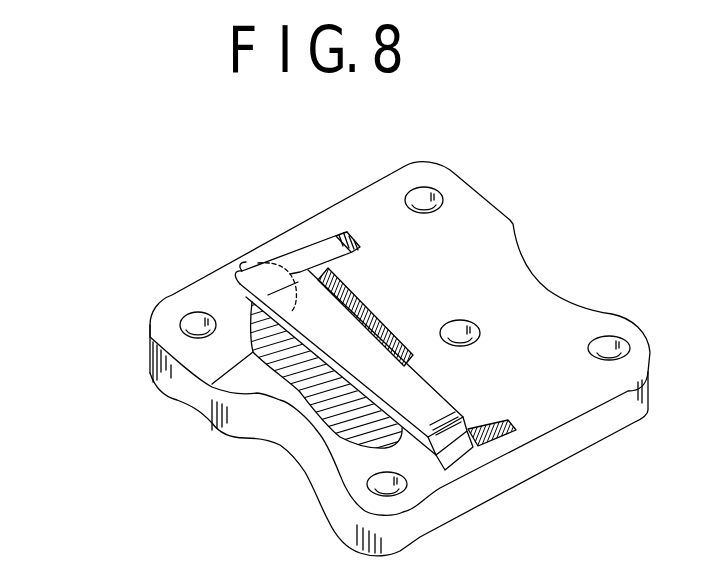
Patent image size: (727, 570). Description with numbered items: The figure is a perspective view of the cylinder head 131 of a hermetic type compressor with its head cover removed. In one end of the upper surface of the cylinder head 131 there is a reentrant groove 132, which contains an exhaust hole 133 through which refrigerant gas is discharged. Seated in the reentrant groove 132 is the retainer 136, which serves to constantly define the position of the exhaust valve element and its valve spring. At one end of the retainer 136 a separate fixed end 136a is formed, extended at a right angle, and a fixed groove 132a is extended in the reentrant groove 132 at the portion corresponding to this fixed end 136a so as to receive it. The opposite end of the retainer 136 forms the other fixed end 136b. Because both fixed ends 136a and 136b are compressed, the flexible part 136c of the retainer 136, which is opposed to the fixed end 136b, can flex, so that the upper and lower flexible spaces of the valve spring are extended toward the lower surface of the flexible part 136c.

The cylinder head 131 is at (160, 290).
The reentrant groove 132 is at (212, 384).
The fixed groove 132a is at (330, 240).
The exhaust hole 133 is at (300, 400).
The retainer 136 is at (317, 333).
The fixed end 136a is at (320, 250).
The fixed end 136b is at (465, 453).
The flexible part 136c is at (240, 272).